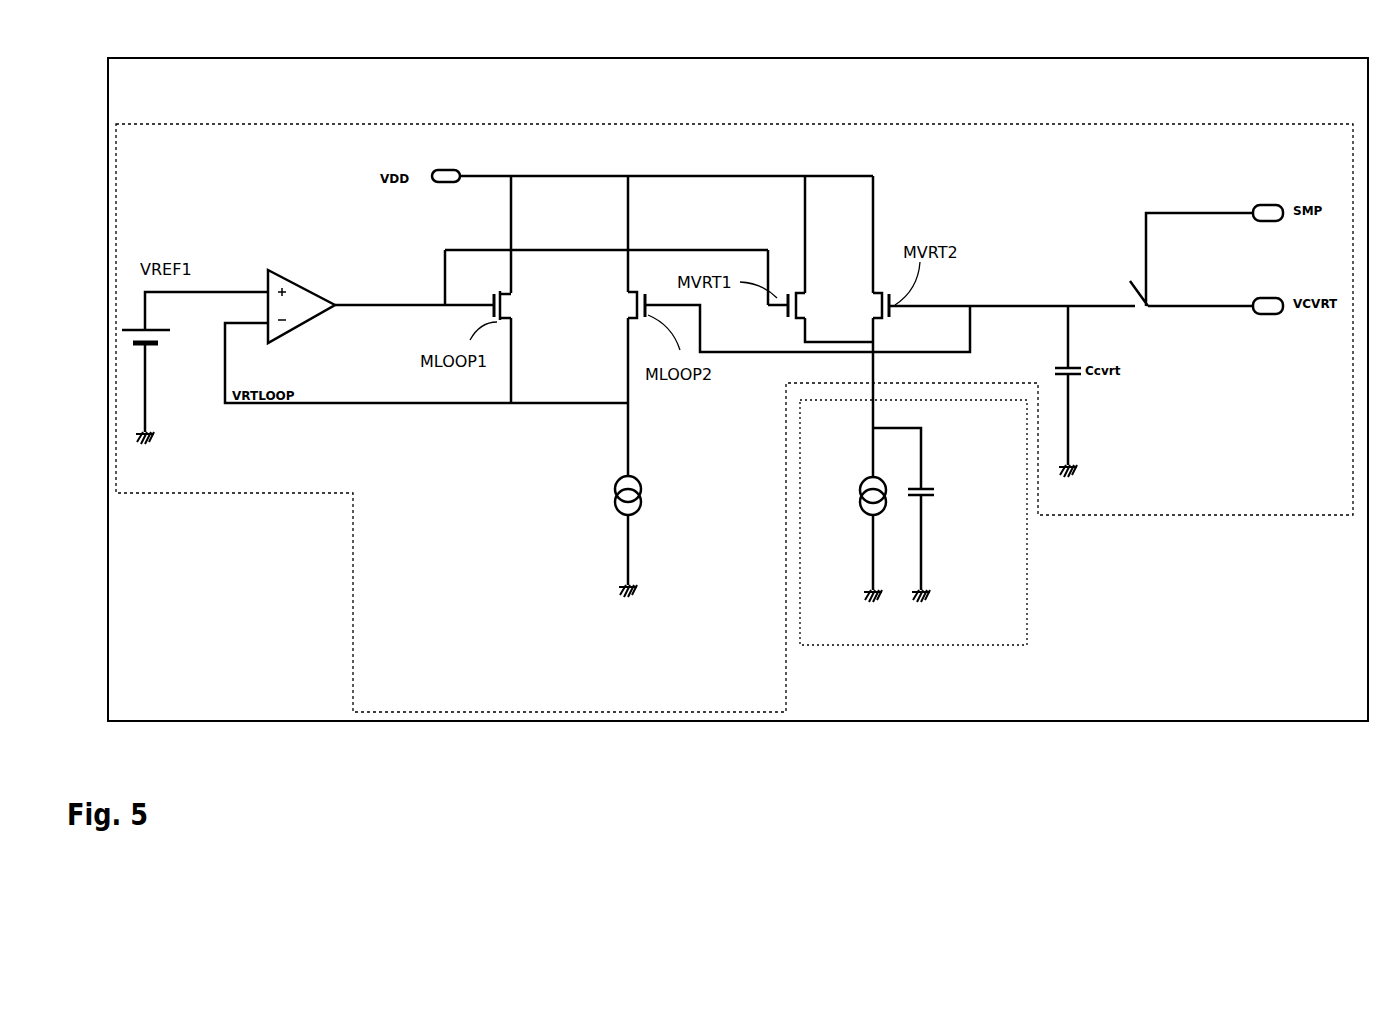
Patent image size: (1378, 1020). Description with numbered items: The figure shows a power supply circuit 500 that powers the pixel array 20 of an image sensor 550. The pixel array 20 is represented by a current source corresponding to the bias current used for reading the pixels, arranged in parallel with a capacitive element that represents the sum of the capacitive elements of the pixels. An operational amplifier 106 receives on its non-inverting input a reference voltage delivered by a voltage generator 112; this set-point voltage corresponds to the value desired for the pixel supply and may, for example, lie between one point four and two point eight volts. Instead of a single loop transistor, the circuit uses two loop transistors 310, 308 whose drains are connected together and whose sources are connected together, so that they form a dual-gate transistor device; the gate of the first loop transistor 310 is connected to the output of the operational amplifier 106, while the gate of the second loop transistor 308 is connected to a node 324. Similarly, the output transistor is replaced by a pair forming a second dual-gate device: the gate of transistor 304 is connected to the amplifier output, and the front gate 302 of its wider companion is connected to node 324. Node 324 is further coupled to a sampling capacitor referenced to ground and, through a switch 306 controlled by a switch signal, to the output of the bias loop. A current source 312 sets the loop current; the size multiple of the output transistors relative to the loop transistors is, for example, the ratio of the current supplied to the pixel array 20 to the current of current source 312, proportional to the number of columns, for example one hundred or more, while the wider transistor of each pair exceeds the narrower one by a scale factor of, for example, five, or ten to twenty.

The image sensor 550 is at (290, 59).
The power supply circuit 500 is at (650, 124).
The operational amplifier 106 is at (318, 320).
The voltage generator 112 is at (168, 345).
The first loop transistor MLOOP1 310 is at (490, 297).
The second loop transistor MLOOP2 308 is at (638, 291).
The first transistor MVRT1 304 is at (786, 314).
The front gate 302 is at (892, 312).
The node 324 is at (975, 305).
The switch 306 is at (1140, 310).
The current source 312 is at (612, 509).
The pixel array 20 is at (1025, 590).